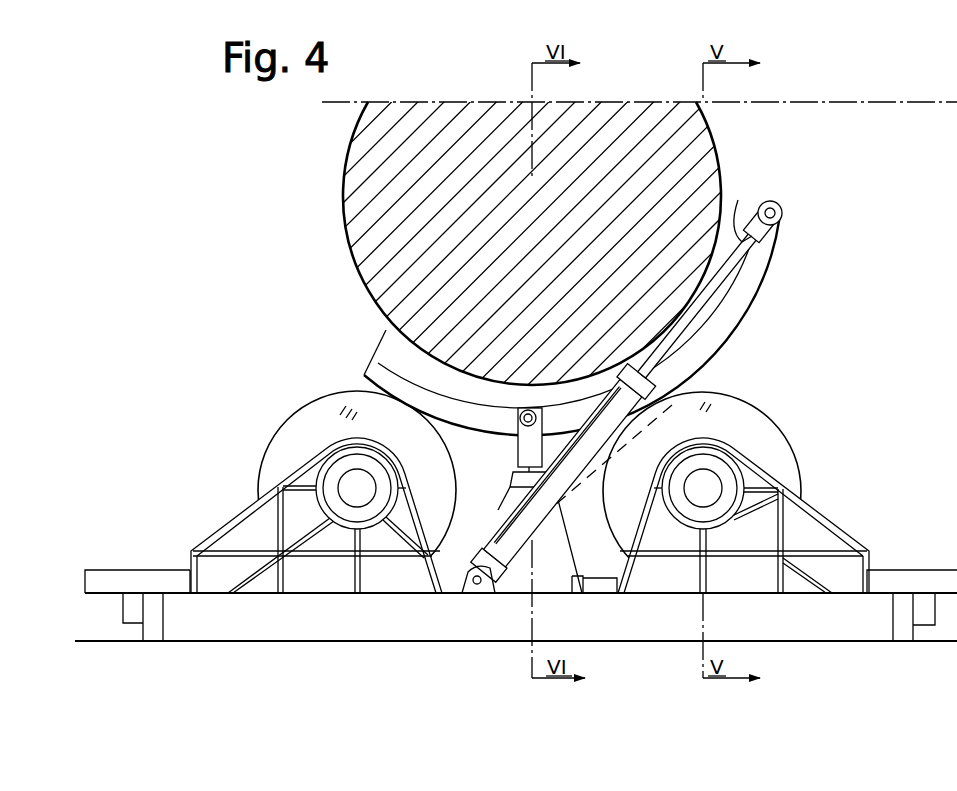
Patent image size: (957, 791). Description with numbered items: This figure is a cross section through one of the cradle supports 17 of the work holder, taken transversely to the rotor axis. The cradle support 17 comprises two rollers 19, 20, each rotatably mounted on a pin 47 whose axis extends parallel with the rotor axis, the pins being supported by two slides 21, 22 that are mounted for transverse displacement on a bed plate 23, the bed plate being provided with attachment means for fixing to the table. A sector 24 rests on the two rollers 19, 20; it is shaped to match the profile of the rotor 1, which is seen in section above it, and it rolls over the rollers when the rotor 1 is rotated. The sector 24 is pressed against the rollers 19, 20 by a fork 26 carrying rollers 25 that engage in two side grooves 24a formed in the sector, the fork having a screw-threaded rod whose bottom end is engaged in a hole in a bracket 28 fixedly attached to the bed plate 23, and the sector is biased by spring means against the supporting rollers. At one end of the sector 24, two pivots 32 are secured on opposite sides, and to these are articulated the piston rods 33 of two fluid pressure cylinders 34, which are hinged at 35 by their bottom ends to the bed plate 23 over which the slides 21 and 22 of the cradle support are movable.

The rotor 1 is at (352, 208).
The cradle support 17 is at (775, 390).
The roller 19 is at (318, 412).
The roller 20 is at (772, 443).
The slide 21 is at (221, 524).
The slide 22 is at (834, 523).
The bed plate 23 is at (348, 627).
The sector 24 is at (600, 326).
The side groove 24a is at (727, 304).
The roller 25 is at (537, 409).
The fork 26 is at (527, 448).
The bracket 28 is at (522, 497).
The pivot 32 is at (782, 212).
The piston rod 33 is at (743, 240).
The fluid pressure cylinder 34 is at (558, 482).
The hinge 35 is at (477, 586).
The pin 47 is at (703, 487).